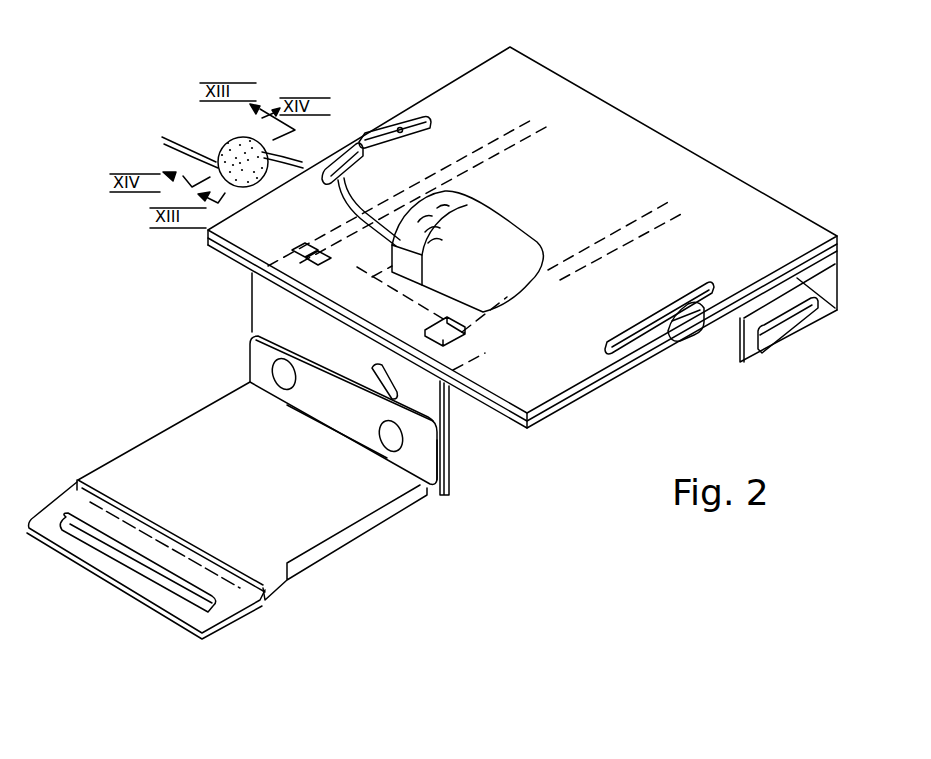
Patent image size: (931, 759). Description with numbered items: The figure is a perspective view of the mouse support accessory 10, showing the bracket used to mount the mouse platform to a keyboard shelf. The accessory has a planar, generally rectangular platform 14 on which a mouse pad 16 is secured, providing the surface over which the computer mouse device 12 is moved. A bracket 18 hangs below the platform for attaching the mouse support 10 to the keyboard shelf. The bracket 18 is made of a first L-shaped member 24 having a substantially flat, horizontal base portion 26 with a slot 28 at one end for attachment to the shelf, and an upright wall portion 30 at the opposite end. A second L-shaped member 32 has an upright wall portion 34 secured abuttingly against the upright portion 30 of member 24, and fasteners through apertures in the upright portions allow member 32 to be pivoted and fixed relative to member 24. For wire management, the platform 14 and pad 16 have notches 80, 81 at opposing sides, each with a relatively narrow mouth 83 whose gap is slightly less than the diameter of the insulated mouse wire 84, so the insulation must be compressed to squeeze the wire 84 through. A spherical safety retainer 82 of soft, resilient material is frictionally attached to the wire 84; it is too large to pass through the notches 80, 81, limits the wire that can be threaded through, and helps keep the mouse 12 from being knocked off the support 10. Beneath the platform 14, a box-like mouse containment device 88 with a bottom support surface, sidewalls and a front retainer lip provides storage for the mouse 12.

The mouse support accessory 10 is at (506, 509).
The computer mouse device 12 is at (513, 238).
The platform 14 is at (600, 390).
The mouse pad 16 is at (775, 208).
The bracket 18 is at (453, 483).
The first L-shaped member 24 is at (360, 502).
The horizontal base portion 26 is at (177, 448).
The slot 28 is at (147, 572).
The upright wall portion 30 is at (260, 362).
The second L-shaped member 32 is at (442, 462).
The upright wall portion 34 is at (430, 410).
The notch 80 is at (694, 304).
The notch 81 is at (404, 128).
The safety retainer 82 is at (232, 147).
The mouth 83 is at (362, 140).
The insulated mouse wire 84 is at (287, 160).
The mouse containment device 88 is at (777, 311).